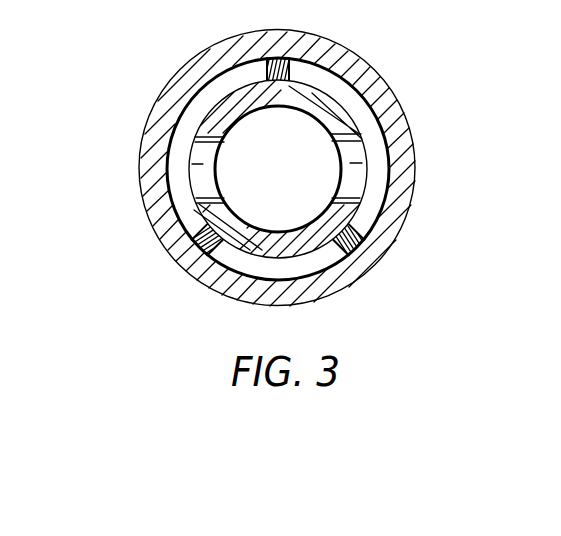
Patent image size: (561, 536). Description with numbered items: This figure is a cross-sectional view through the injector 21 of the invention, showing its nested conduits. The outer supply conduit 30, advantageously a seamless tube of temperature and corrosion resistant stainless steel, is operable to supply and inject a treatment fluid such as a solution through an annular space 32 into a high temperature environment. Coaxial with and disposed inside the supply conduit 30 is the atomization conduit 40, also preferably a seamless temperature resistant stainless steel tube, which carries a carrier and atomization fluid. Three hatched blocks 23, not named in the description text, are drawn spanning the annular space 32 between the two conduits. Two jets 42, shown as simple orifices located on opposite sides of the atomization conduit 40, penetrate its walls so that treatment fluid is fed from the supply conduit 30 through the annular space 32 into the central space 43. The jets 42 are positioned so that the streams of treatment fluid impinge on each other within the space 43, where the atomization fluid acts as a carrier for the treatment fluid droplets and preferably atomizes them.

The injector 21 is at (139, 129).
The key block 23 is at (263, 64).
The supply conduit 30 is at (404, 134).
The annular space 32 is at (348, 92).
The atomization conduit 40 is at (311, 108).
The jet 42 is at (223, 262).
The space 43 is at (265, 194).